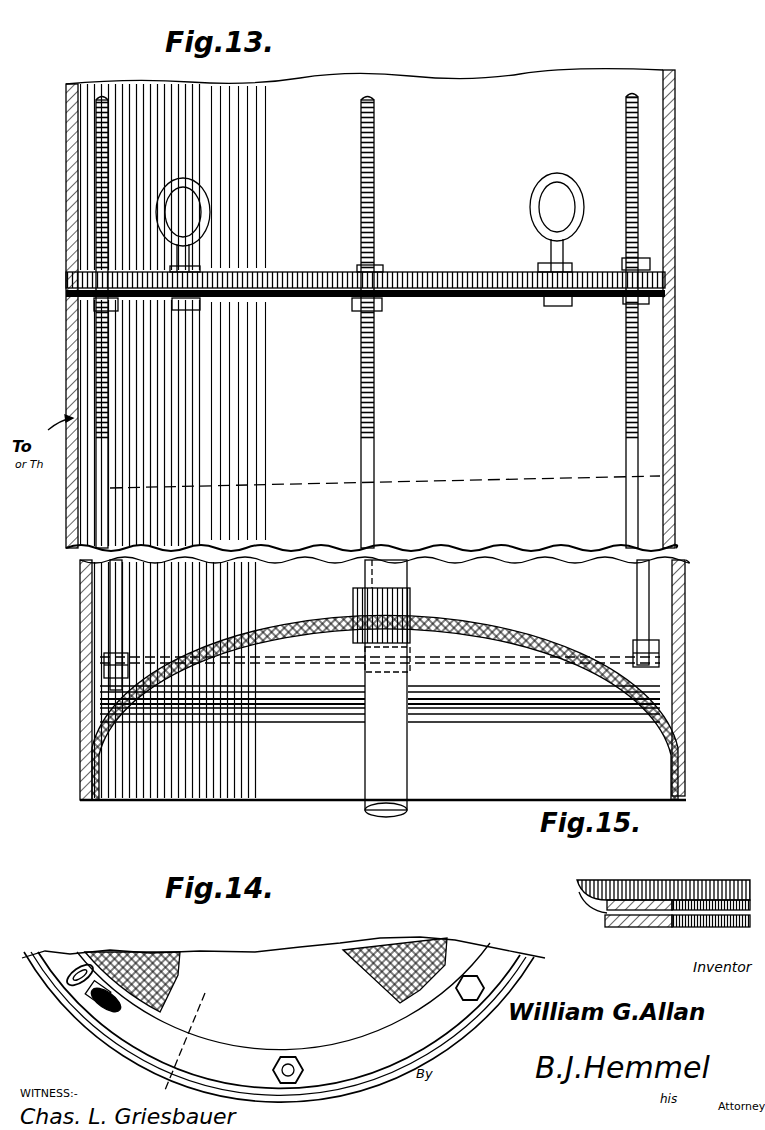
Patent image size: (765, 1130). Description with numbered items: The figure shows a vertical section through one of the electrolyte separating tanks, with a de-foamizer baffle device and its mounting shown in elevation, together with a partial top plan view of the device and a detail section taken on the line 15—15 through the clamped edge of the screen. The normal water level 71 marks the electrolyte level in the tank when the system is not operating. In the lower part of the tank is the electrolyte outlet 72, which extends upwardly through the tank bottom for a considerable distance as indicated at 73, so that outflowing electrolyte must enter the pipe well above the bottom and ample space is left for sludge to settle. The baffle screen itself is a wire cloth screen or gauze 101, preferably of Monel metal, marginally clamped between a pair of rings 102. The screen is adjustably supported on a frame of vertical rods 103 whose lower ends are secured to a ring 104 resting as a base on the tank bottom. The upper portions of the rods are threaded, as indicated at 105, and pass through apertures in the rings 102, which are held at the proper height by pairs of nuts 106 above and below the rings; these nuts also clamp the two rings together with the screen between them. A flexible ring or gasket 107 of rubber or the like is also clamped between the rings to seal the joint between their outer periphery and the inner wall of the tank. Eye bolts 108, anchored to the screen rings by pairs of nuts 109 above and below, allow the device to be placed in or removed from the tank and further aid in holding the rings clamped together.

In FIG. 14, the section line 15 is at (186, 1040).
In FIG. 13, the normal water level 71 is at (210, 487).
In FIG. 13, the electrolyte outlet 72 is at (378, 710).
In FIG. 13, the upwardly extending outlet portion 73 is at (398, 575).
In FIG. 14, the wire cloth screen 101 is at (202, 963).
In FIG. 15, the wire cloth screen 101 is at (712, 927).
In FIG. 13, the rings 102 is at (249, 298).
In FIG. 14, the rings 102 is at (240, 1058).
In FIG. 15, the rings 102 is at (605, 913).
In FIG. 13, the vertical rods 103 is at (100, 383).
In FIG. 14, the vertical rods 103 is at (298, 1078).
In FIG. 13, the ring 104 is at (132, 667).
In FIG. 13, the threaded portion 105 is at (660, 658).
In FIG. 13, the nuts 106 is at (92, 282).
In FIG. 14, the nuts 106 is at (300, 1062).
In FIG. 13, the flexible ring or gasket 107 is at (312, 274).
In FIG. 14, the flexible ring or gasket 107 is at (136, 1064).
In FIG. 15, the flexible ring or gasket 107 is at (578, 893).
In FIG. 13, the eye bolts 108 is at (212, 198).
In FIG. 14, the eye bolts 108 is at (68, 1003).
In FIG. 13, the nuts 109 is at (206, 288).
In FIG. 14, the nuts 109 is at (98, 1027).